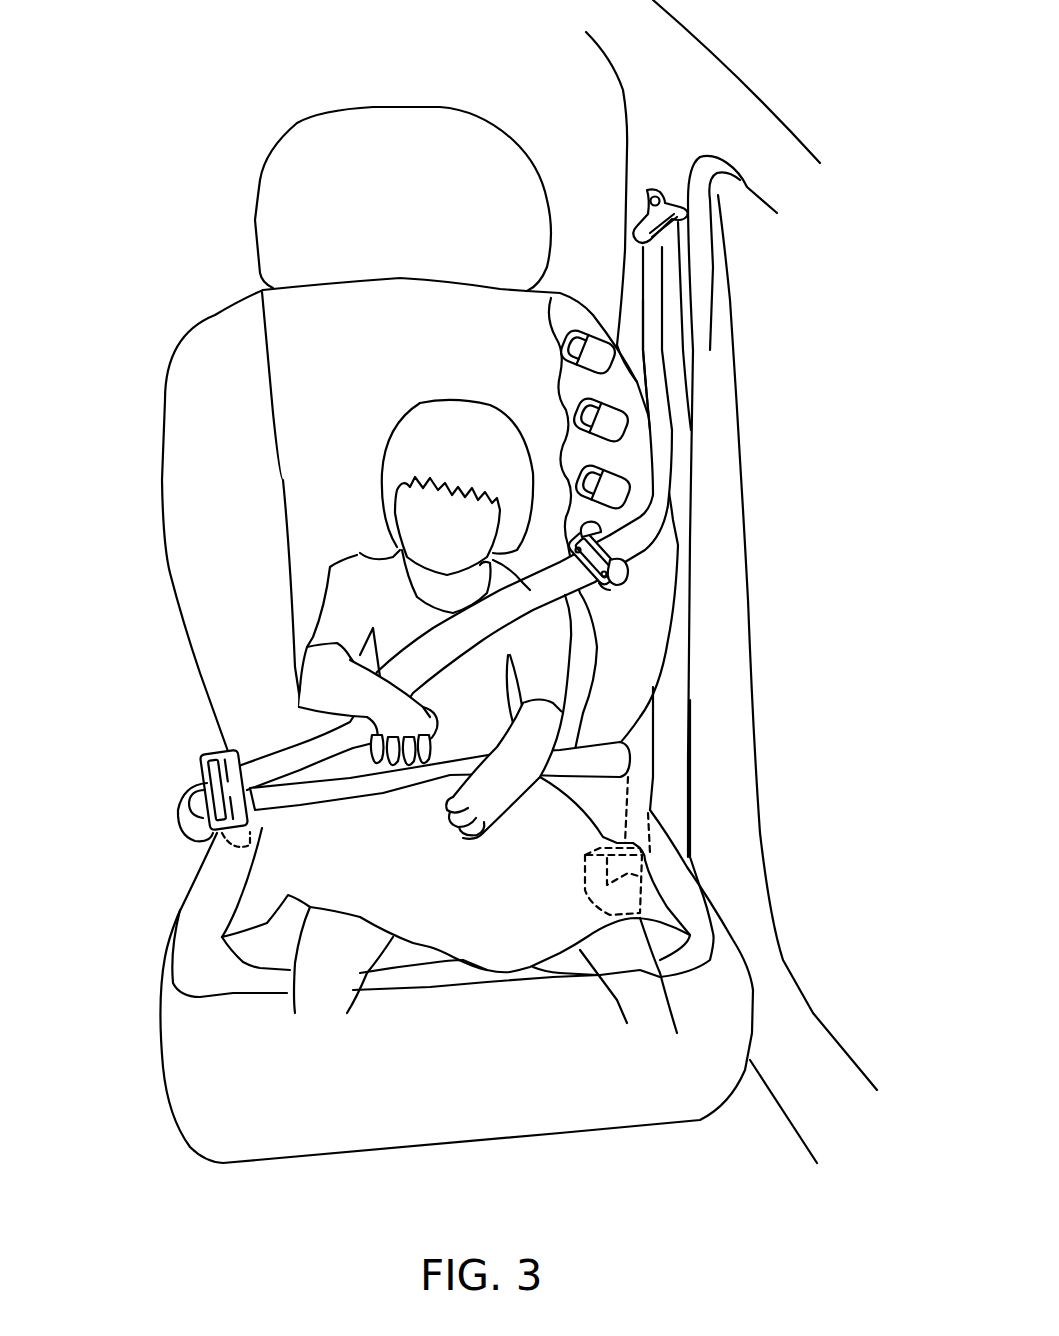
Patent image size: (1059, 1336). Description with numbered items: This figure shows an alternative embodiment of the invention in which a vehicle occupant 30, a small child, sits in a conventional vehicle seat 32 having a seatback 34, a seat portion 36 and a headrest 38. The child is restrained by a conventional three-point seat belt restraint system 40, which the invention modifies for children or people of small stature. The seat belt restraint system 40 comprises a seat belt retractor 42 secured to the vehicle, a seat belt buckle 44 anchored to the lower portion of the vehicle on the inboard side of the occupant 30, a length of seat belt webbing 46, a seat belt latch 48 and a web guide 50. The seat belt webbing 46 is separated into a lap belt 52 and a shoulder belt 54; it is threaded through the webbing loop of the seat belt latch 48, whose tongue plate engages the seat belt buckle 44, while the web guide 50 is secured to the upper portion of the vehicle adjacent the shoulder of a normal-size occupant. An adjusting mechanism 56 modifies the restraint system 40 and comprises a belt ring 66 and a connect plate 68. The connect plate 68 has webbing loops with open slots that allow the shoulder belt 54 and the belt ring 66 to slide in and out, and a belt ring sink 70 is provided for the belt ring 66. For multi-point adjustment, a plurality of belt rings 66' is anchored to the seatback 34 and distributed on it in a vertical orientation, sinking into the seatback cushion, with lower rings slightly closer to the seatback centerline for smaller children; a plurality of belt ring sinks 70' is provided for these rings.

The vehicle occupant 30 is at (463, 428).
The vehicle seat 32 is at (178, 314).
The seatback 34 is at (207, 463).
The seat portion 36 is at (193, 1060).
The headrest 38 is at (287, 190).
The seat belt restraint system 40 is at (678, 463).
The seat belt retractor 42 is at (593, 893).
The seat belt buckle 44 is at (183, 813).
The seat belt webbing 46 is at (297, 753).
The seat belt latch 48 is at (203, 758).
The web guide 50 is at (690, 222).
The lap belt 52 is at (447, 770).
The shoulder belt 54 is at (650, 500).
The adjusting mechanism 56 is at (640, 560).
The belt ring 66 is at (697, 567).
The belt rings 66' is at (551, 340).
The connect plate 68 is at (617, 583).
The belt ring sink 70 is at (674, 613).
The belt ring sinks 70' is at (536, 363).